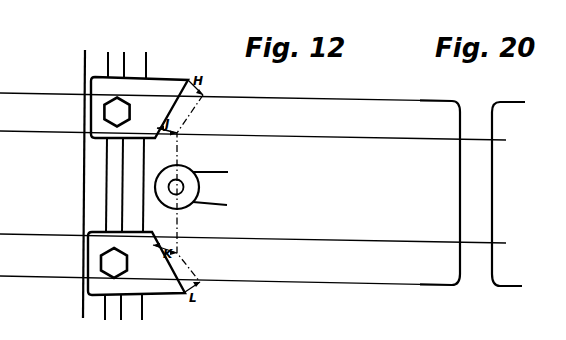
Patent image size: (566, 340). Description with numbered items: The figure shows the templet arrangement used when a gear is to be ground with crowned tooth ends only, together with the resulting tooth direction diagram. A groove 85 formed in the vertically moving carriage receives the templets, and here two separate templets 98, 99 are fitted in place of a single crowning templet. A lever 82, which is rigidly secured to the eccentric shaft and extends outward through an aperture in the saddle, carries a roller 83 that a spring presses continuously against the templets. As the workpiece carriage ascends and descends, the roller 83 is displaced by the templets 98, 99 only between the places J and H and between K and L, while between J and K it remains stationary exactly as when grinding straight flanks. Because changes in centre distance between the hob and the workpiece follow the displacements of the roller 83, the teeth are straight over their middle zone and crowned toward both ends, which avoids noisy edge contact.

The lever 82 is at (222, 171).
The roller 83 is at (188, 168).
The groove 85 is at (117, 185).
The templet 98 is at (163, 108).
The templet 99 is at (167, 298).